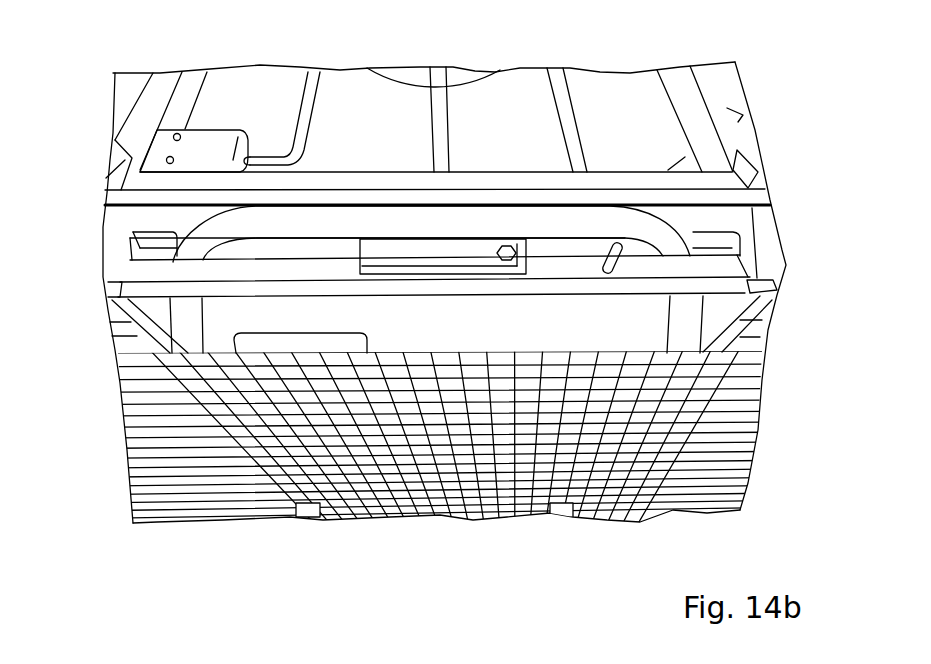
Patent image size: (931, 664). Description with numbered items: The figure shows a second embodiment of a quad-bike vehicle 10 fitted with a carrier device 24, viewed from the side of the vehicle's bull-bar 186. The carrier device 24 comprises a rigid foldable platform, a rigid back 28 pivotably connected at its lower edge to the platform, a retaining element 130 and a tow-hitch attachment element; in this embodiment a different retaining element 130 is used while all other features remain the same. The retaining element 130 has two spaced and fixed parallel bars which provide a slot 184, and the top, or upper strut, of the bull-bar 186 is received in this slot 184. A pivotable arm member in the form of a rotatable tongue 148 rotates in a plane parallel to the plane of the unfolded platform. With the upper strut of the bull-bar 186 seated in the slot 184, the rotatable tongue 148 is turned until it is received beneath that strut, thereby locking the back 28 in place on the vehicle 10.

The air conditioning unit 10 is at (613, 90).
The carrier device 24 is at (752, 333).
The rigid back 28 is at (160, 450).
The retaining element 130 is at (753, 232).
The rotatable tongue 148 is at (460, 258).
The slot 184 is at (147, 248).
The bull-bar 186 is at (215, 228).